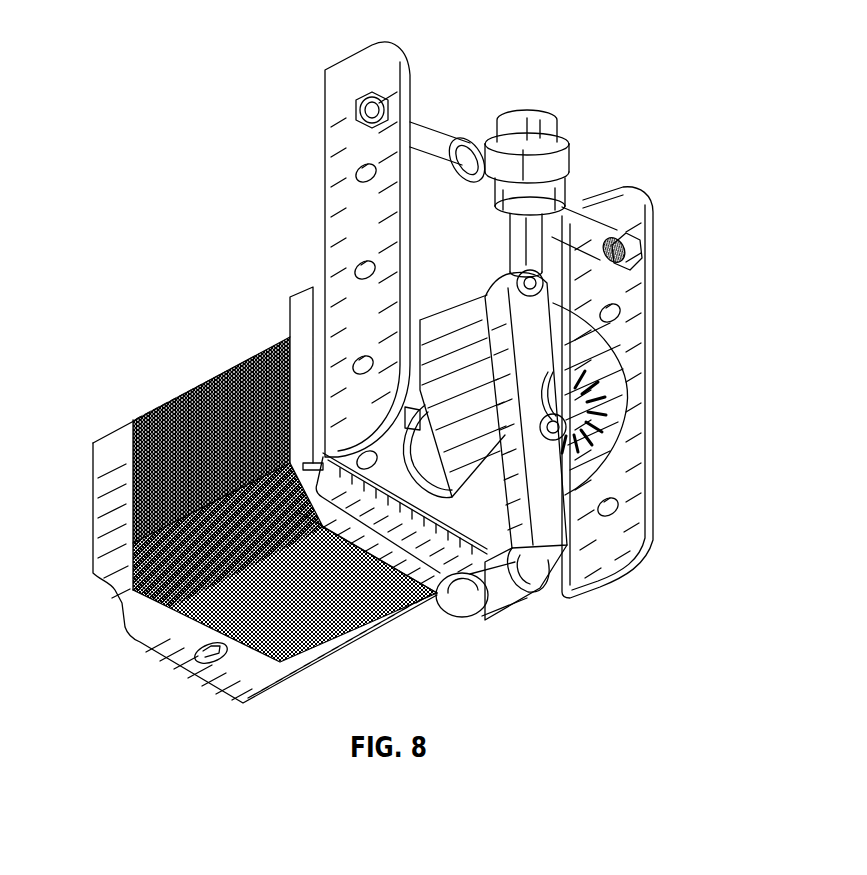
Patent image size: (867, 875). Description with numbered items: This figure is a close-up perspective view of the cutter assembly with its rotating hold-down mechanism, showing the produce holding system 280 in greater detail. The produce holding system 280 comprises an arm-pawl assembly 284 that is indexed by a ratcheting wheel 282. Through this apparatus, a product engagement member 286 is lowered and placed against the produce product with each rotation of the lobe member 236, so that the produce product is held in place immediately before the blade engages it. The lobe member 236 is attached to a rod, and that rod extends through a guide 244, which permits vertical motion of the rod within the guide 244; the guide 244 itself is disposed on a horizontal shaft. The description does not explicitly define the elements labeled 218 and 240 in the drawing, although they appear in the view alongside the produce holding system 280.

The brush assembly 218 is at (641, 48).
The brush 240 is at (213, 373).
The lobe member 236 is at (615, 442).
The guide 244 is at (563, 163).
The produce holding system 280 is at (476, 640).
The arm-pawl assembly 284 is at (462, 314).
The ratcheting wheel 282 is at (600, 410).
The product engagement member 286 is at (535, 562).